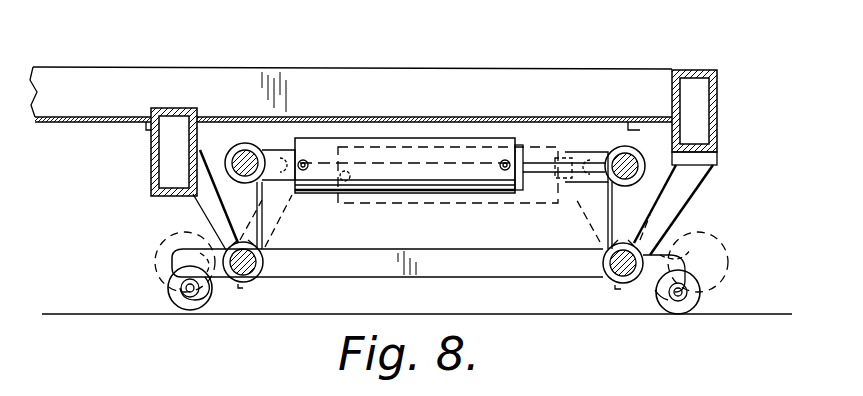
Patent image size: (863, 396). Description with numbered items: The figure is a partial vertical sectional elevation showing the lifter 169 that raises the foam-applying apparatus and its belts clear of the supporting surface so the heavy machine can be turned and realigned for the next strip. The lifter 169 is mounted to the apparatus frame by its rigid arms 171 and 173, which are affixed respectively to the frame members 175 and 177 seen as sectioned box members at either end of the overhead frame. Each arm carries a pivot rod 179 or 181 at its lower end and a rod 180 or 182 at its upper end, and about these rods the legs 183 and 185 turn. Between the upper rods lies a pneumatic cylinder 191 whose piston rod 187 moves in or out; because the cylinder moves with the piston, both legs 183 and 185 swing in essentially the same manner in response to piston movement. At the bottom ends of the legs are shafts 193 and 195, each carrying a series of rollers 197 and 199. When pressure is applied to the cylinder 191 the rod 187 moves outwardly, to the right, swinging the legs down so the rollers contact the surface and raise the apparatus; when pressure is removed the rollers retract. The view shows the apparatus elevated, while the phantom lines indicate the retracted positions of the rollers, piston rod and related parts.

The lifter 169 is at (705, 186).
The rigid arm 171 is at (205, 205).
The rigid arm 173 is at (690, 204).
The frame member 175 is at (151, 150).
The frame member 177 is at (717, 97).
The pivot rod 179 is at (245, 283).
The rod 180 is at (245, 143).
The pivot rod 181 is at (625, 284).
The rod 182 is at (625, 146).
The leg 183 is at (185, 258).
The leg 185 is at (700, 250).
The piston rod 187 is at (542, 150).
The pneumatic cylinder 191 is at (385, 138).
The shaft 193 is at (186, 288).
The shaft 195 is at (696, 310).
The rollers 197 is at (180, 305).
The rollers 199 is at (675, 314).